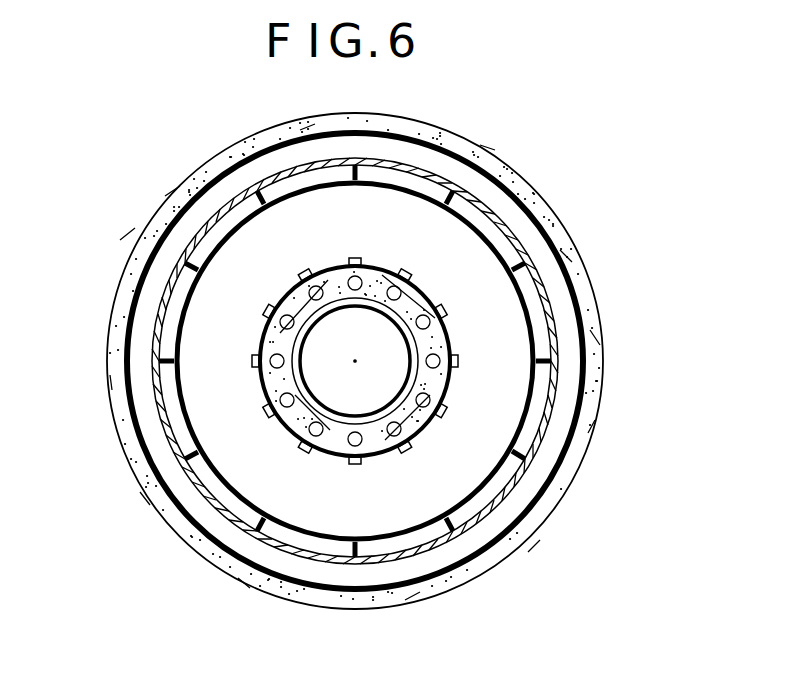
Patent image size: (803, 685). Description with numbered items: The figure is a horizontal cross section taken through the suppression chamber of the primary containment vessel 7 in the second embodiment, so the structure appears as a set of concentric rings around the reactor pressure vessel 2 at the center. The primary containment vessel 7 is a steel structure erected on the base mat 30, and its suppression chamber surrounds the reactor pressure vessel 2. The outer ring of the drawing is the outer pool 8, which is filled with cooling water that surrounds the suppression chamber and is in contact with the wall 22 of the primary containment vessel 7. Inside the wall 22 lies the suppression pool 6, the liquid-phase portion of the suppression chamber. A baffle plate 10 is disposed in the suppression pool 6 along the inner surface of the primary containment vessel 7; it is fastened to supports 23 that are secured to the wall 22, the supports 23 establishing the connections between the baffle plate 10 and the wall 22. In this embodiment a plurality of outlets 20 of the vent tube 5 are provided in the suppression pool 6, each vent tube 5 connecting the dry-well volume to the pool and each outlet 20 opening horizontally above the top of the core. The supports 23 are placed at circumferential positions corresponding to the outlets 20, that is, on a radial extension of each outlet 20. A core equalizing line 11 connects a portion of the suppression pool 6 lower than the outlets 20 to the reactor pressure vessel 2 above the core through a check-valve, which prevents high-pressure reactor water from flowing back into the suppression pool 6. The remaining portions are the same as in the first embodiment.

The reactor pressure vessel 2 is at (372, 290).
The vent tube 5 is at (283, 302).
The suppression pool 6 is at (455, 485).
The primary containment vessel 7 is at (560, 309).
The outer pool 8 is at (157, 448).
The baffle plate 10 is at (173, 333).
The core equalizing line 11 is at (445, 340).
The outlet 20 is at (203, 248).
The wall 22 is at (167, 280).
The support 23 is at (148, 383).
The base mat 30 is at (572, 218).